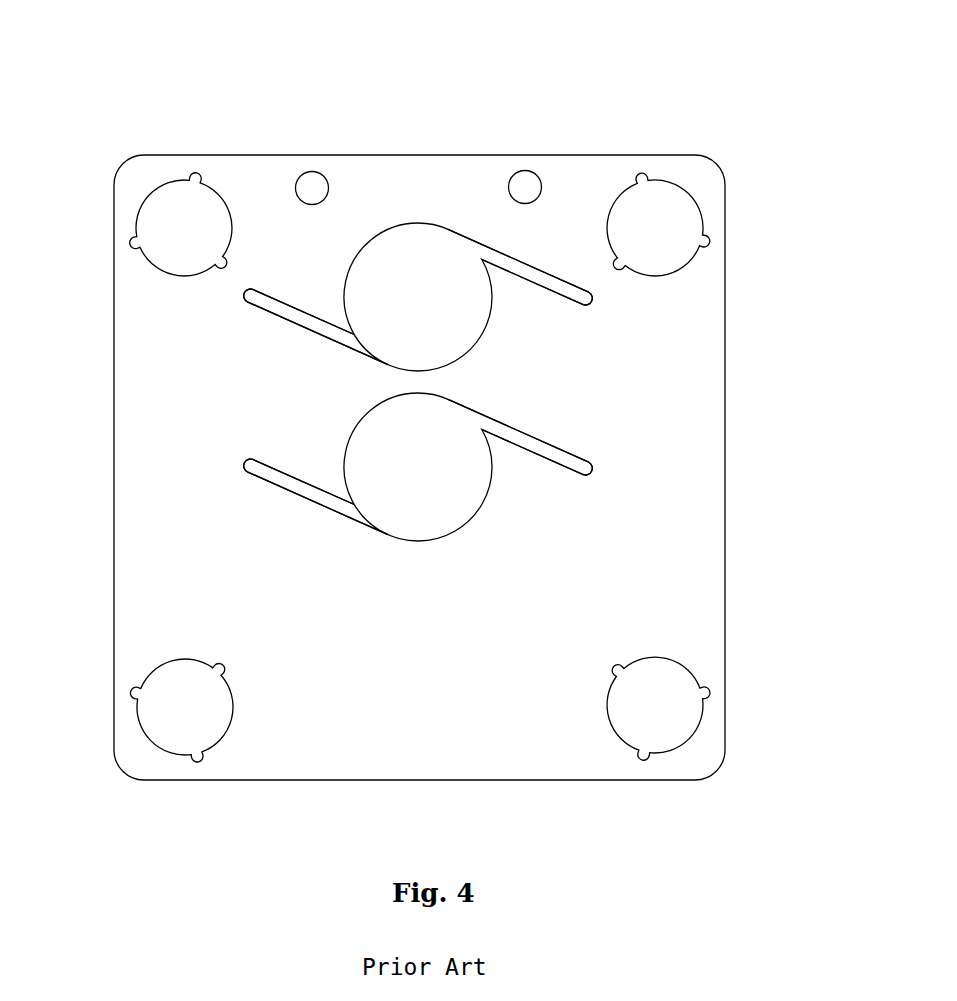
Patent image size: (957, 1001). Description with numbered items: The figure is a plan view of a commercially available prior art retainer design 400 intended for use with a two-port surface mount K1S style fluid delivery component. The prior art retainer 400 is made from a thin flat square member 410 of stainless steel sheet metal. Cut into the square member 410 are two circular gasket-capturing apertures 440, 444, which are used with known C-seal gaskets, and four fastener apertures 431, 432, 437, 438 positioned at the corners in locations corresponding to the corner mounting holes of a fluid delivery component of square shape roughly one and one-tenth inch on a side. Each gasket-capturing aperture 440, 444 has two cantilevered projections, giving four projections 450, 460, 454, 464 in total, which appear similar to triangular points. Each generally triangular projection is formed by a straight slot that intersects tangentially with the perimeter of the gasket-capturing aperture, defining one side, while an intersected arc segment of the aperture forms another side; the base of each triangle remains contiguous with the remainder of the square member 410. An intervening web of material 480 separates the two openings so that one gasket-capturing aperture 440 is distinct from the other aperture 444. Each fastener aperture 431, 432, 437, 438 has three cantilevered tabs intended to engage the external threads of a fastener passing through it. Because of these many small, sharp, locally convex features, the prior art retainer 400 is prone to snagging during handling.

The prior art retainer design 400 is at (283, 150).
The thin flat square member 410 is at (692, 553).
The fastener aperture 431 is at (692, 198).
The fastener aperture 432 is at (147, 195).
The fastener aperture 437 is at (150, 742).
The fastener aperture 438 is at (687, 742).
The circular gasket-capturing aperture 440 is at (347, 272).
The circular gasket-capturing aperture 444 is at (357, 420).
The cantilevered projection 450 is at (348, 330).
The cantilevered projection 454 is at (348, 500).
The cantilevered projection 460 is at (490, 265).
The cantilevered projection 464 is at (490, 435).
The intervening web of material 480 is at (440, 382).